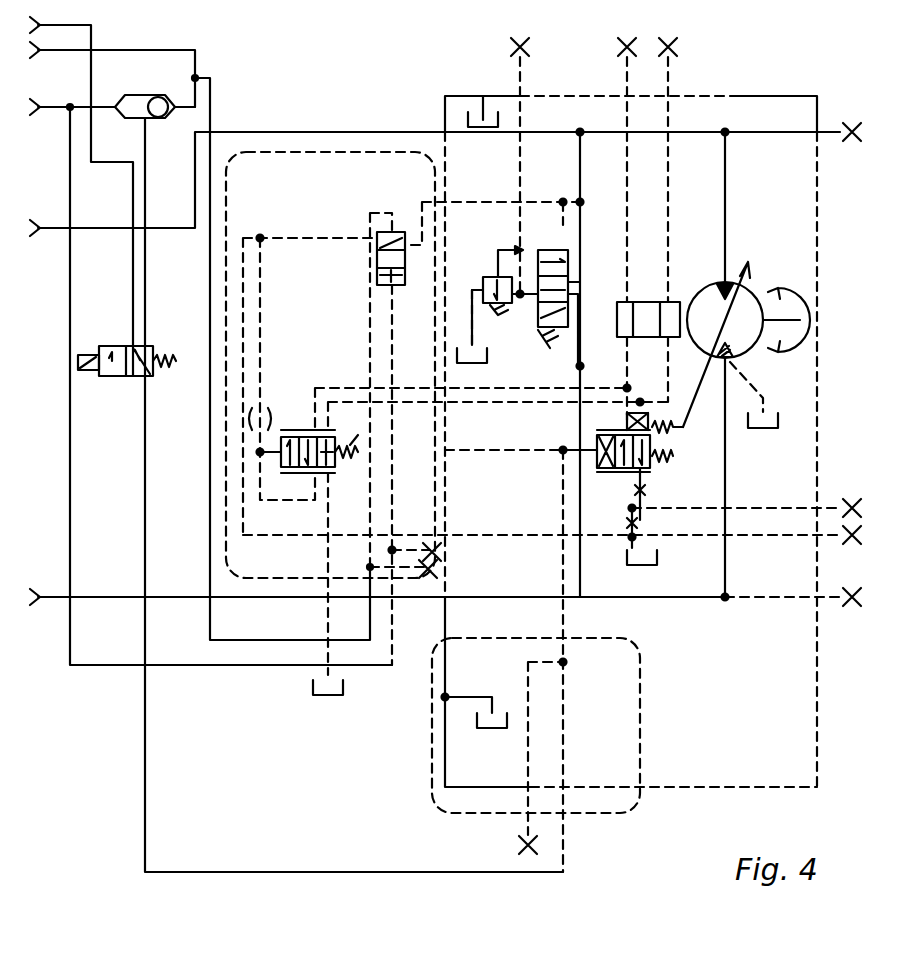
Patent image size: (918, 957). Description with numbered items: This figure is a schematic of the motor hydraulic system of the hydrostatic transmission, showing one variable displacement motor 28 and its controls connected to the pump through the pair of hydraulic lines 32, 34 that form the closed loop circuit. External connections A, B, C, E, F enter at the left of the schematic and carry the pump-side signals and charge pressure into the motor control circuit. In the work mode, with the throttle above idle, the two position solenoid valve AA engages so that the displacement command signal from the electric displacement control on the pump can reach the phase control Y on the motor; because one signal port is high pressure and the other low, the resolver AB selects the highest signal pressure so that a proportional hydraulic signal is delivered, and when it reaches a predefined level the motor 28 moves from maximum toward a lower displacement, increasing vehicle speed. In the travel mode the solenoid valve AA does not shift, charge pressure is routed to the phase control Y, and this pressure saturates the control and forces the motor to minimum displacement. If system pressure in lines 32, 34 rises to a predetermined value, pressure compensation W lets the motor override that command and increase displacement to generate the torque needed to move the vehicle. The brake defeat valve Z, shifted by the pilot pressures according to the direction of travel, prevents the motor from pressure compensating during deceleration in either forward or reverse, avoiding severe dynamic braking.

The motor MV 28 is at (693, 285).
The hydraulic line 32 is at (55, 228).
The hydraulic line 34 is at (55, 597).
The resolver AB is at (140, 95).
The two position solenoid valve AA is at (112, 346).
The brake defeat valve Z is at (405, 228).
The pressure compensation W is at (300, 437).
The phase control Y is at (650, 472).
The port A is at (75, 180).
The port B is at (195, 339).
The port C is at (205, 380).
The port E is at (429, 186).
The port F is at (371, 596).